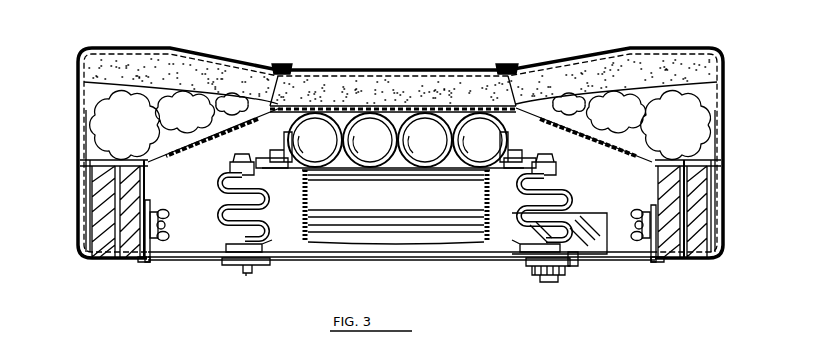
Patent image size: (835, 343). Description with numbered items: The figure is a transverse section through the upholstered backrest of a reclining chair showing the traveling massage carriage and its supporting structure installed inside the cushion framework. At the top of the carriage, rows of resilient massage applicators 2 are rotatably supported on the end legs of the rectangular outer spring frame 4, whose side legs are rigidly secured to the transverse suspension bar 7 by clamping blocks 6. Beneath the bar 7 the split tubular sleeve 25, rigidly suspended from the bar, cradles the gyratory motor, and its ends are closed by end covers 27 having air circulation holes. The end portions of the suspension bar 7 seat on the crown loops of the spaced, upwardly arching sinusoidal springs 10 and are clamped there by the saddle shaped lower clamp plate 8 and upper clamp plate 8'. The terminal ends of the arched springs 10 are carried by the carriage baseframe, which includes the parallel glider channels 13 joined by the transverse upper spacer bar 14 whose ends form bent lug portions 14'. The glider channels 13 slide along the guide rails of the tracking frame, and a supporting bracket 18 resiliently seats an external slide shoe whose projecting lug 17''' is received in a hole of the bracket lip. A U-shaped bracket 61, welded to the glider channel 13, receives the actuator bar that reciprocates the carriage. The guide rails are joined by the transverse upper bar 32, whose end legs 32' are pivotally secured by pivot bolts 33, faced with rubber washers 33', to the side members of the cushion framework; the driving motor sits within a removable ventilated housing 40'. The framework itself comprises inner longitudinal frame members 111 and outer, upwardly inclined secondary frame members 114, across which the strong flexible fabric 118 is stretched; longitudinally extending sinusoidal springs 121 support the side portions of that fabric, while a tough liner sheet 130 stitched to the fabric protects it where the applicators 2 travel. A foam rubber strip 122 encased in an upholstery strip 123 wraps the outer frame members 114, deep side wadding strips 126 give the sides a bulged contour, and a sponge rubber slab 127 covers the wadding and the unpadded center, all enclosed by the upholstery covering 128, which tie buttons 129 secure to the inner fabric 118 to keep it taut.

The resilient massage applicators 2 is at (397, 140).
The outer spring frame 4 is at (278, 138).
The clamping blocks 6 is at (256, 155).
The transverse bar 7 is at (345, 166).
The lower clamp plate 8 is at (373, 175).
The upper clamp plate 8' is at (394, 152).
The arching springs 10 is at (224, 210).
The glider channels 13 is at (232, 264).
The upper spacer bar 14 is at (401, 268).
The bent lug portions 14' is at (590, 267).
The lug 17''' is at (251, 290).
The supporting bracket 18 is at (243, 270).
The split tubular sleeve 25 is at (404, 198).
The end covers 27 is at (300, 212).
The transverse upper bar 32 is at (401, 269).
The end legs 32' is at (401, 216).
The pivot bolts 33 is at (400, 257).
The rubber washers 33' is at (393, 277).
The ventilated housing 40' is at (559, 212).
The U-shaped bracket 61 is at (537, 282).
The longitudinally extending frame members 111 is at (126, 238).
The secondary longitudinal frame members 114 is at (106, 192).
The flexible fabric 118 is at (230, 130).
The longitudinally extending sinusoidal springs 121 is at (183, 140).
The foam rubber strip 122 is at (92, 220).
The upholstery covering strip 123 is at (82, 172).
The side wadding strips 126 is at (97, 93).
The sponge rubber slab 127 is at (120, 62).
The upholstery covering 128 is at (393, 72).
The tie buttons 129 is at (283, 64).
The liner sheet 130 is at (410, 108).